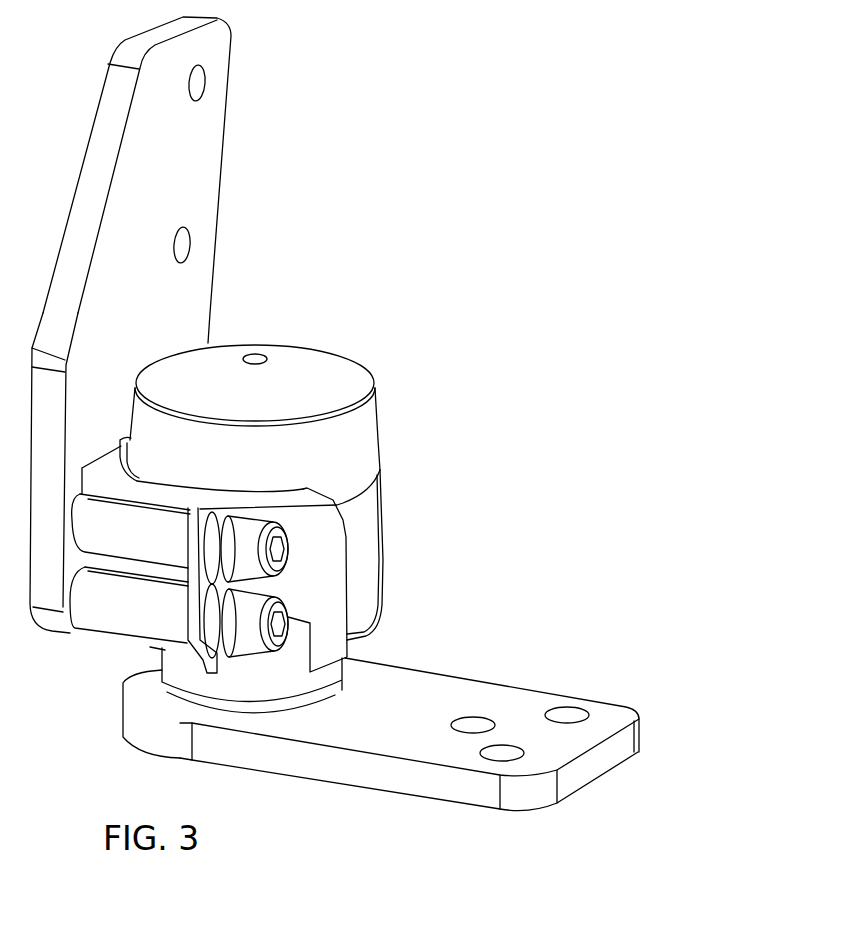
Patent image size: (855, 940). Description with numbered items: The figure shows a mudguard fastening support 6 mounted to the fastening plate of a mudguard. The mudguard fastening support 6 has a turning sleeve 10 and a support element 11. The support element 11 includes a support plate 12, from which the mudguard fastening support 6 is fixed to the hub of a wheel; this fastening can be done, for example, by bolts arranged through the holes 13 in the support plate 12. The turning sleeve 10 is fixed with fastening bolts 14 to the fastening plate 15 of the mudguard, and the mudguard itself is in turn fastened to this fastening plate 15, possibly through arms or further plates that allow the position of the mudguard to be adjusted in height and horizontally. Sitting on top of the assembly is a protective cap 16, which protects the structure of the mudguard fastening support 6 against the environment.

The mudguard fastening support 6 is at (442, 398).
The turning sleeve 10 is at (138, 612).
The support element 11 is at (437, 648).
The support plate 12 is at (455, 700).
The holes 13 is at (463, 727).
The fastening bolts 14 is at (252, 542).
The fastening plate of the mudguard 15 is at (197, 159).
The protective cap 16 is at (347, 444).